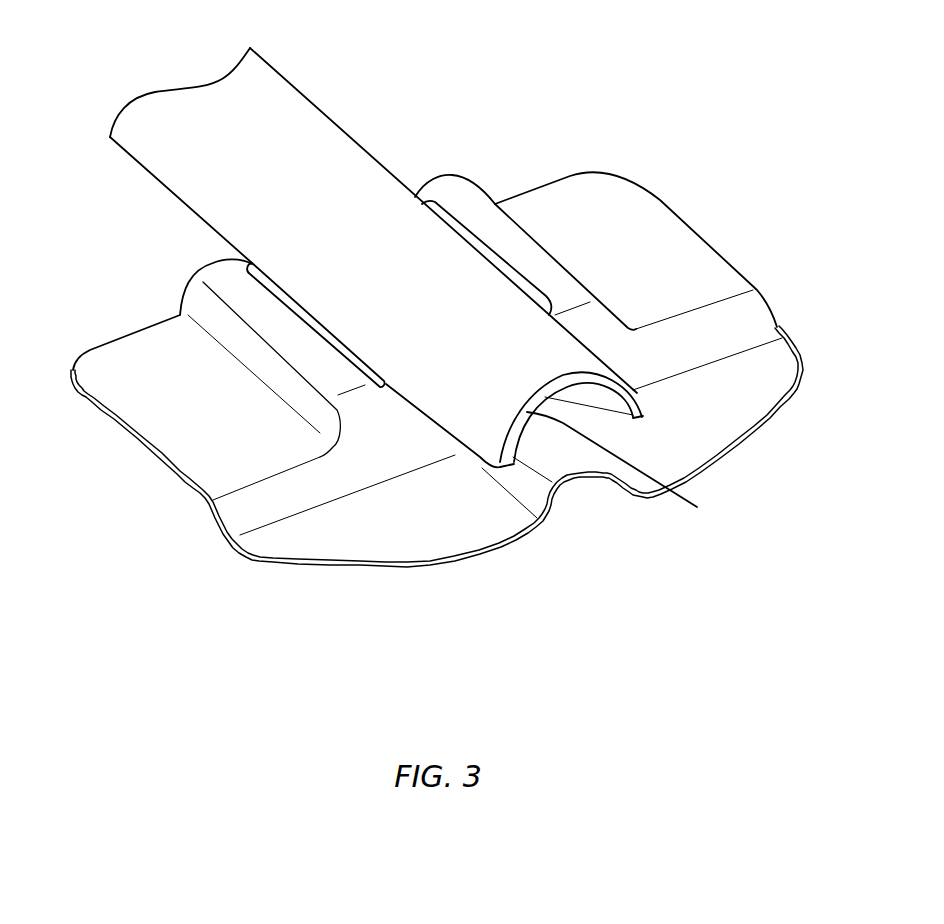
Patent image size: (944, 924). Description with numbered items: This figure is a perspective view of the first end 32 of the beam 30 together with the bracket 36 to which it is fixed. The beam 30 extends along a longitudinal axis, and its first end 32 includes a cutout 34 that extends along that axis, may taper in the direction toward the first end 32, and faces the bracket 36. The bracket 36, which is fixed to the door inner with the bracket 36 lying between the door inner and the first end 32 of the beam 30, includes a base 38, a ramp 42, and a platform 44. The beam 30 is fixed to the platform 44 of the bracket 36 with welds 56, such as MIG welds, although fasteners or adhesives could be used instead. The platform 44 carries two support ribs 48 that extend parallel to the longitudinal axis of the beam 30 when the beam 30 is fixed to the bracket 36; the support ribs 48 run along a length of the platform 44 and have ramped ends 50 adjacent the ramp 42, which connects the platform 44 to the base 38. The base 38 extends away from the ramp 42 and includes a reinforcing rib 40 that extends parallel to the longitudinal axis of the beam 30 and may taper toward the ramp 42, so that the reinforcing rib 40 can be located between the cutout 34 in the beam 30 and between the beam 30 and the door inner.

The beam 30 is at (290, 80).
The first end 32 is at (366, 218).
The cutout 34 is at (593, 427).
The bracket 36 is at (690, 220).
The base 38 is at (410, 530).
The reinforcing rib 40 is at (567, 462).
The ramp 42 is at (267, 495).
The platform 44 is at (140, 353).
The support ribs 48 is at (220, 287).
The ramped ends 50 is at (372, 412).
The welds 56 is at (274, 280).